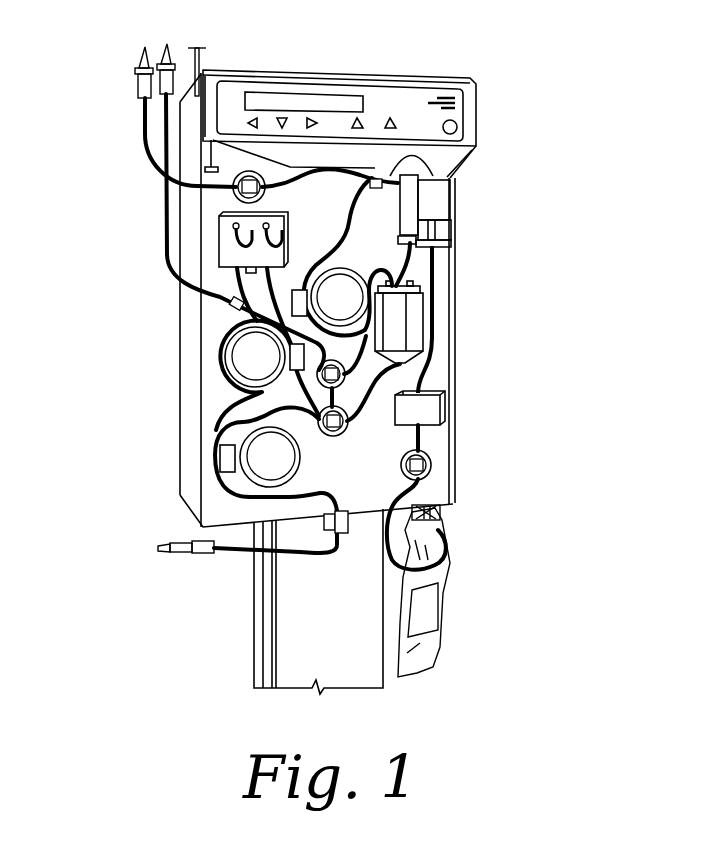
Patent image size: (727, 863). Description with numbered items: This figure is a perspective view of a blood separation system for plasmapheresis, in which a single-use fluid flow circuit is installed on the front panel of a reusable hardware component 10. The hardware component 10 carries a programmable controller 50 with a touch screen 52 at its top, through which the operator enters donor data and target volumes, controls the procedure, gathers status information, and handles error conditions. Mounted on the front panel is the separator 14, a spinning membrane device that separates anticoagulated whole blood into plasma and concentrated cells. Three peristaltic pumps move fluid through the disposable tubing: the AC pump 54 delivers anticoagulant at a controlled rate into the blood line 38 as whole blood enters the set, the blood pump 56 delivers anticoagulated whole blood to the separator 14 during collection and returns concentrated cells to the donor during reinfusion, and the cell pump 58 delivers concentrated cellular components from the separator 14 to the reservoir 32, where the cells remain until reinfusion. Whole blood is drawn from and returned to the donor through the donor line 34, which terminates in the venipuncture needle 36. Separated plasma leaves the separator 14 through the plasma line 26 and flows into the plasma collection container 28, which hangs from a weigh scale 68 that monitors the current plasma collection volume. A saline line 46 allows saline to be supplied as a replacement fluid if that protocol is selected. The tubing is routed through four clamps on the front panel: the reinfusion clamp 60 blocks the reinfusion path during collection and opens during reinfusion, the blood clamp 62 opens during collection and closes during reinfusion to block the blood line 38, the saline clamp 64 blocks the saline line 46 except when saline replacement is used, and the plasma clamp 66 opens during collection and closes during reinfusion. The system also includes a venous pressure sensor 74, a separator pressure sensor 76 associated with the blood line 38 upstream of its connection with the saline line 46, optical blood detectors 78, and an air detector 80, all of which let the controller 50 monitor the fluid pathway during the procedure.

The hardware component 10 is at (513, 106).
The separator 14 is at (413, 200).
The plasma line 26 is at (432, 352).
The plasma collection container 28 is at (436, 549).
The reservoir 32 is at (416, 308).
The donor line 34 is at (228, 551).
The venipuncture needle 36 is at (178, 543).
The blood line 38 is at (375, 228).
The saline line 46 is at (143, 105).
The programmable controller 50 is at (417, 97).
The touch screen 52 is at (257, 97).
The AC pump 54 is at (243, 354).
The blood pump 56 is at (255, 457).
The cell pump 58 is at (353, 284).
The reinfusion clamp 60 is at (339, 437).
The blood clamp 62 is at (345, 377).
The saline clamp 64 is at (256, 176).
The plasma clamp 66 is at (427, 465).
The weigh scale 68 is at (440, 511).
The venous pressure sensor 74 is at (235, 226).
The separator pressure sensor 76 is at (266, 226).
The optical blood detectors 78 is at (437, 411).
The air detector 80 is at (322, 527).